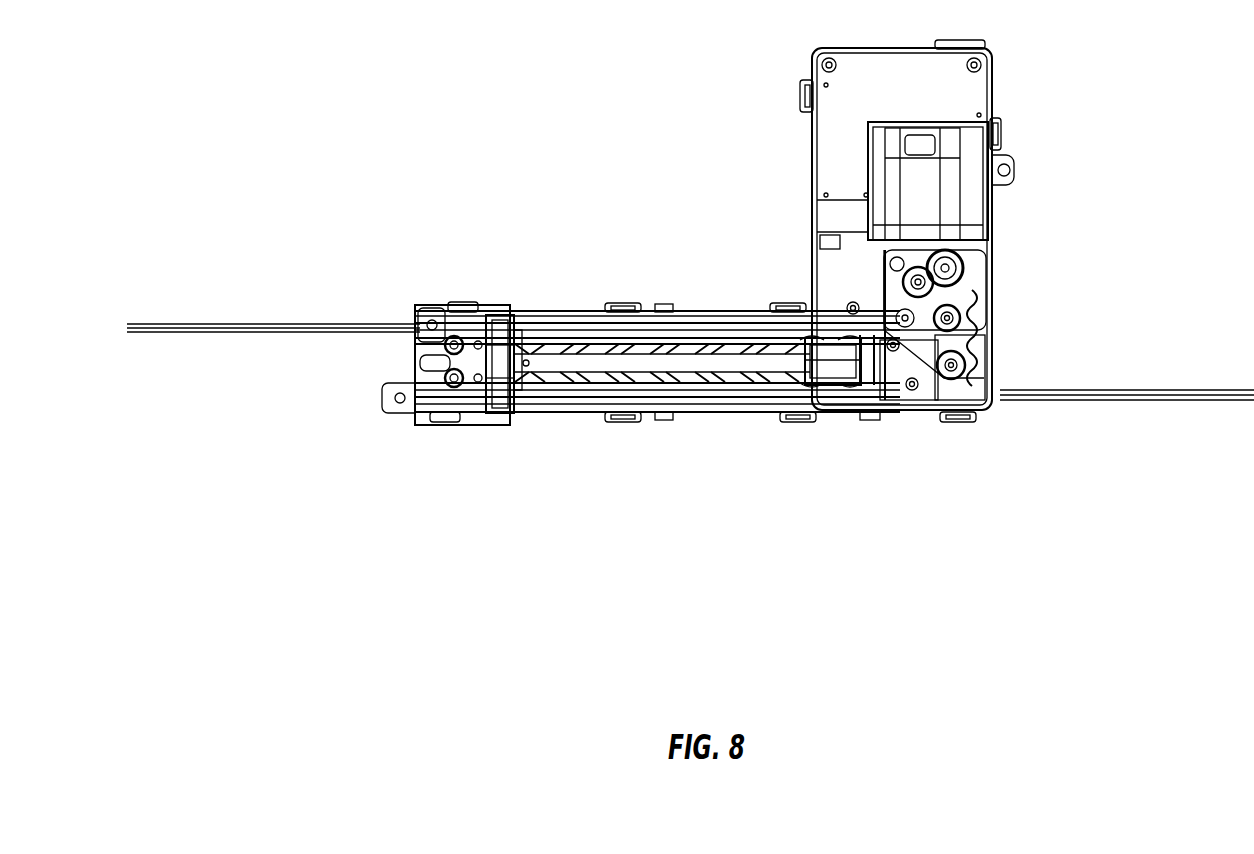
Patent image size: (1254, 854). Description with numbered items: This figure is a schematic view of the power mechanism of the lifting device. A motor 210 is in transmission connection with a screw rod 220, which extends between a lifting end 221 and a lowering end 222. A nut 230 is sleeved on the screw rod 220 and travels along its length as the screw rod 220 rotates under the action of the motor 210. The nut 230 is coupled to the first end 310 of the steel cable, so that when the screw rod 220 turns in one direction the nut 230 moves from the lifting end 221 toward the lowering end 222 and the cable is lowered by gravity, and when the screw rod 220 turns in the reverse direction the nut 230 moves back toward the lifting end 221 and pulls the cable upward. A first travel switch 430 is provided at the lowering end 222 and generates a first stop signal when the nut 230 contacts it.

The motor 210 is at (925, 185).
The screw rod 220 is at (658, 360).
The lifting end of rod 221 is at (872, 392).
The lowering end of rod 222 is at (505, 320).
The nut for the screw rod 230 is at (832, 365).
The first end of cable 310 is at (1065, 390).
The first travel switch 430 is at (505, 410).